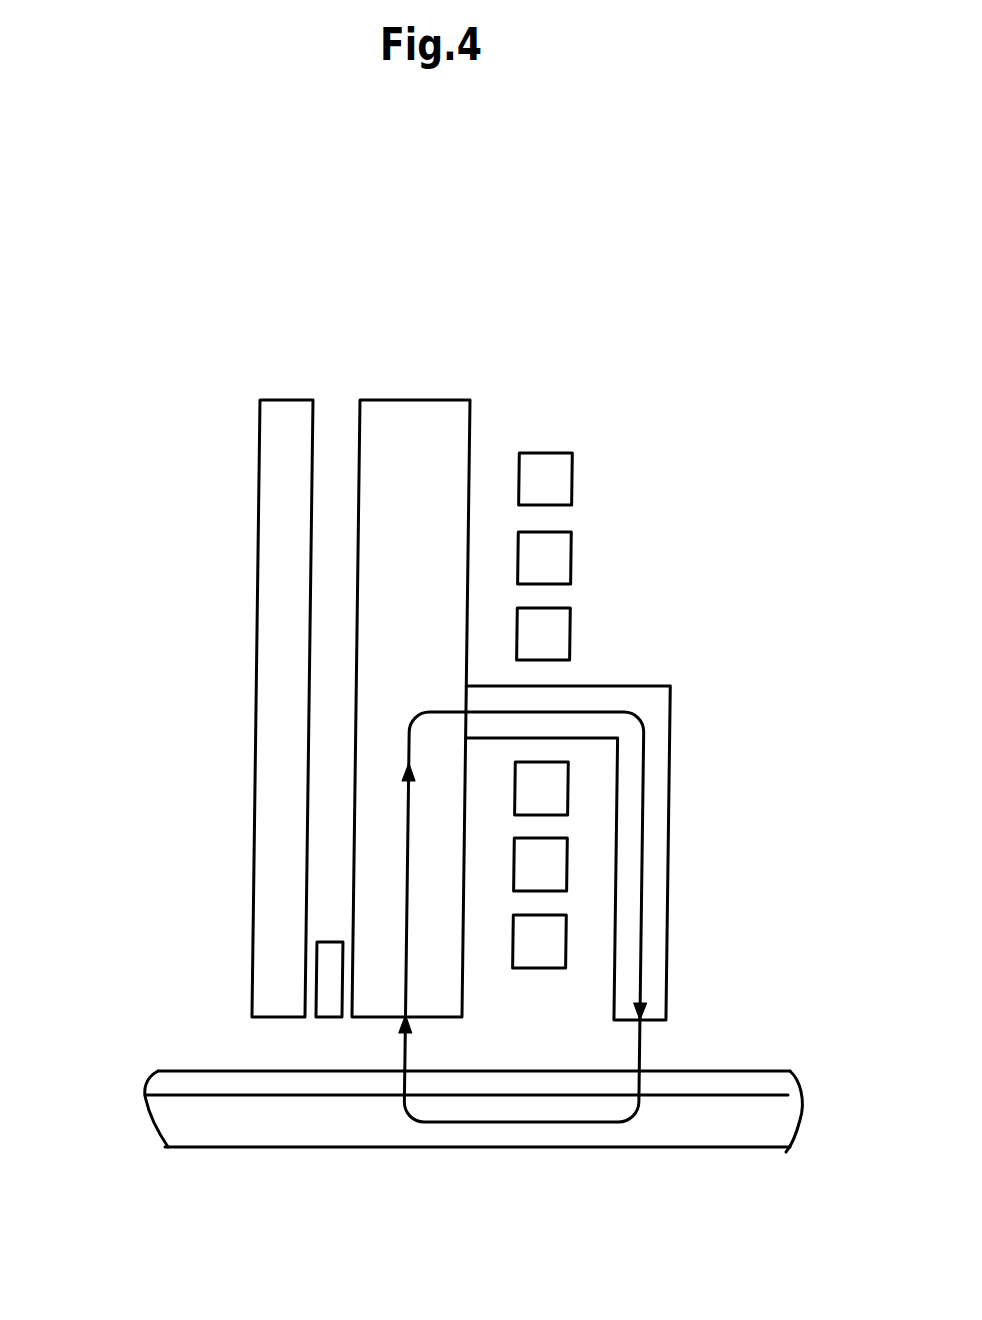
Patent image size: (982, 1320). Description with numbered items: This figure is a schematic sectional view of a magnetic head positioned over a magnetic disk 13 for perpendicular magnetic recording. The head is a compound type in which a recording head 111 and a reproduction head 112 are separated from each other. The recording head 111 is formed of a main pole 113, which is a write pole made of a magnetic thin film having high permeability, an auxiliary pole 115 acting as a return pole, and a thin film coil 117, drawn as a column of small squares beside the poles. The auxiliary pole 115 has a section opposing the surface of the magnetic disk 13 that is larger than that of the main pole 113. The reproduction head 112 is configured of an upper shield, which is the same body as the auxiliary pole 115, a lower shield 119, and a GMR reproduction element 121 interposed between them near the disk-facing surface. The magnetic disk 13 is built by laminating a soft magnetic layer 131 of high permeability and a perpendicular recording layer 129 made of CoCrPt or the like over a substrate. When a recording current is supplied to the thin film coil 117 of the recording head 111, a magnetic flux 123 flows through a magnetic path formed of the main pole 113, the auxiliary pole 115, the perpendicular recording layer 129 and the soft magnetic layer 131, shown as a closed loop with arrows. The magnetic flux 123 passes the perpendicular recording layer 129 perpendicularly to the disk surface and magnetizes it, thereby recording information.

The magnetic disk 13 is at (733, 1047).
The recording head 111 is at (736, 404).
The reproduction head 112 is at (338, 374).
The main pole 113 is at (674, 718).
The auxiliary pole 115 is at (472, 417).
The thin film coil 117 is at (573, 467).
The lower shield 119 is at (260, 513).
The GMR reproduction element 121 is at (336, 1018).
The magnetic flux 123 is at (648, 900).
The perpendicular recording layer 129 is at (157, 1070).
The soft magnetic layer 131 is at (170, 1145).